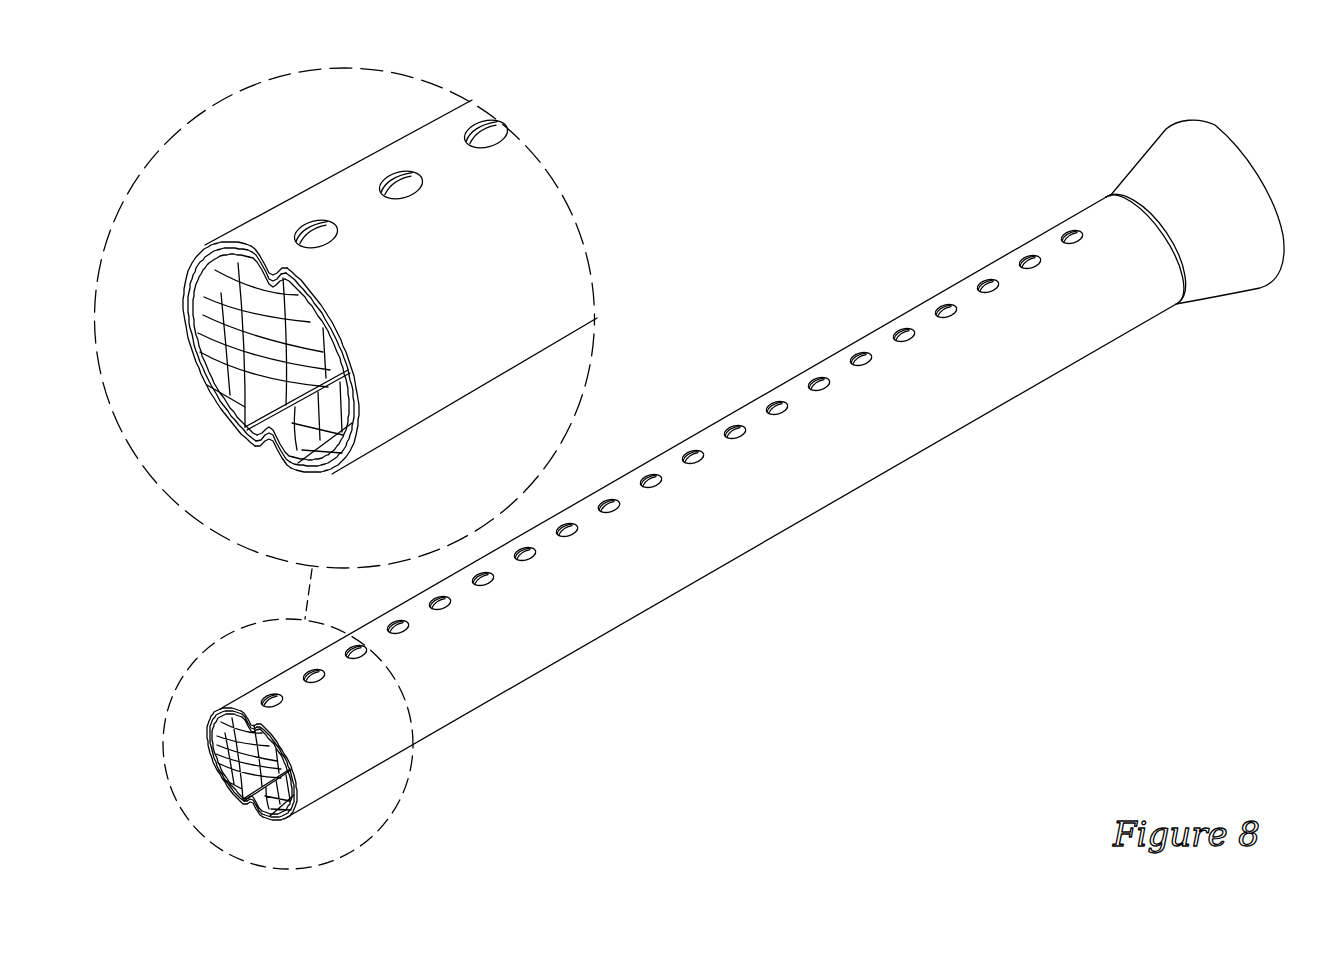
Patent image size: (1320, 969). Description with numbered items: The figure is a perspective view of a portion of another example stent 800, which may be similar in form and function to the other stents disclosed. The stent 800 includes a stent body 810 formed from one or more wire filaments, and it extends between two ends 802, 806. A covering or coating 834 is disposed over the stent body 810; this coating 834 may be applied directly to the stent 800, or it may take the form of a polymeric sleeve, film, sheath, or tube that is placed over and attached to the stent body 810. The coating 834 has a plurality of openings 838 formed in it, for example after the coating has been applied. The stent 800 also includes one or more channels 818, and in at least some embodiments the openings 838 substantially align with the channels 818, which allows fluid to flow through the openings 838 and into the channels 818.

The stent 800 is at (690, 468).
The end 802 is at (358, 424).
The end 806 is at (1146, 157).
The stent body 810 is at (232, 366).
The channel 818 is at (272, 266).
The covering or coating 834 is at (1002, 398).
The opening 838 is at (862, 357).